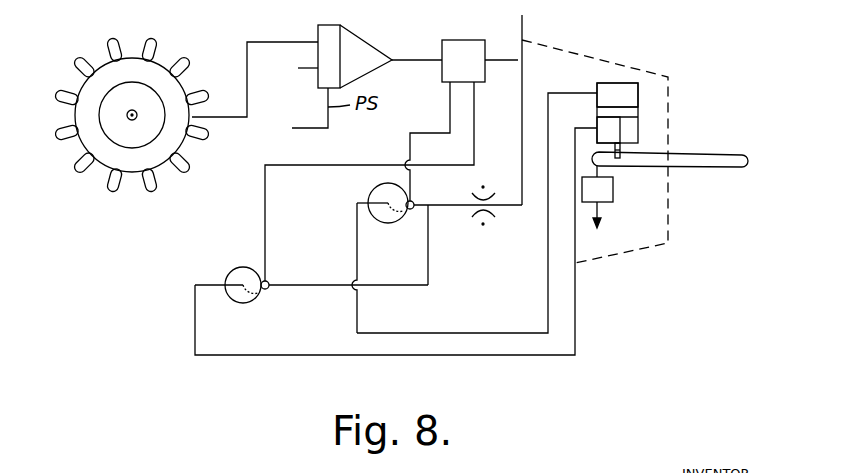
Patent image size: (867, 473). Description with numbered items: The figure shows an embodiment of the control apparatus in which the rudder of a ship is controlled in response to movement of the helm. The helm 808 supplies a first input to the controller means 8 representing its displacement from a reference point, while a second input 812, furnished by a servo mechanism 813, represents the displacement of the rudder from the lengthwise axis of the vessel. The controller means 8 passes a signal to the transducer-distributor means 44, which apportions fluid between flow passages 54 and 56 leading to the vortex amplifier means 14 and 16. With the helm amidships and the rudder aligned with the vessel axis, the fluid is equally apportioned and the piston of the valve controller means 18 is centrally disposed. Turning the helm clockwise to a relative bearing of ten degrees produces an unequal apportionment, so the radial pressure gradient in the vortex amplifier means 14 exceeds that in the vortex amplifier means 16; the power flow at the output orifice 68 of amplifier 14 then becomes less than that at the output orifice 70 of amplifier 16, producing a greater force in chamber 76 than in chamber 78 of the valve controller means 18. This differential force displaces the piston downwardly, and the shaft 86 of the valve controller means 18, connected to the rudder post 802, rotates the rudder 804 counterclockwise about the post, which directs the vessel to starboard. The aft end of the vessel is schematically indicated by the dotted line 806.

The helm 808 is at (160, 62).
The controller means 8 is at (368, 38).
The second input 812 is at (298, 68).
The transducer-distributor means 44 is at (462, 40).
The flow passage 56 is at (450, 110).
The flow passage 54 is at (474, 115).
The vortex amplifier means 16 is at (387, 223).
The vortex amplifier means 14 is at (237, 267).
The output orifice 68 is at (193, 283).
The output orifice 70 is at (358, 313).
The valve controller means 18 is at (597, 83).
The chamber 76 is at (617, 95).
The chamber 78 is at (610, 130).
The rudder post 802 is at (618, 160).
The shaft 86 is at (628, 150).
The rudder 804 is at (726, 152).
The servo mechanism 813 is at (599, 197).
The dotted line 806 is at (670, 90).